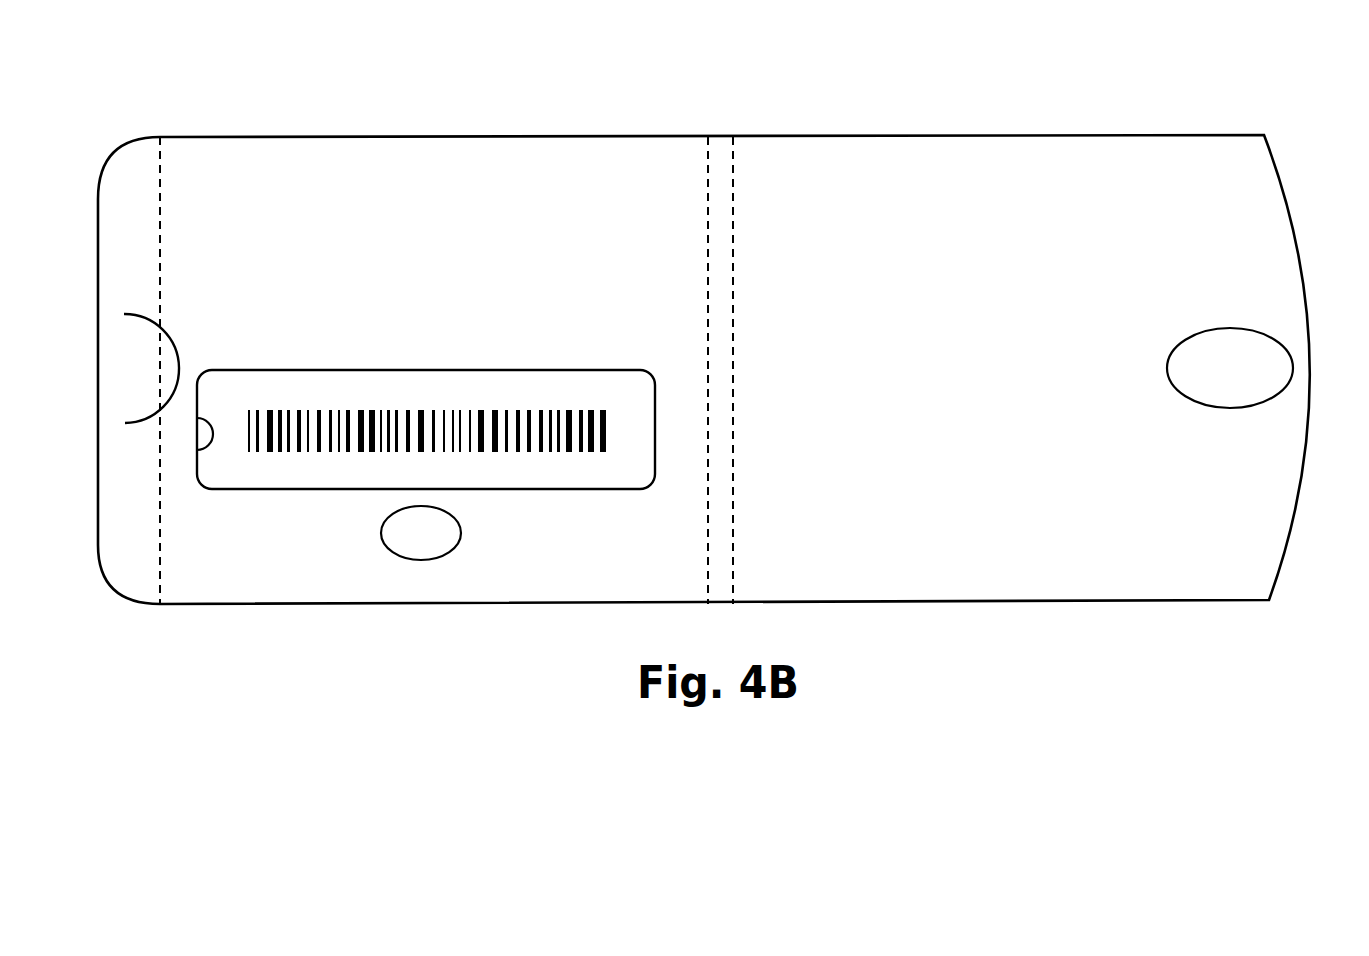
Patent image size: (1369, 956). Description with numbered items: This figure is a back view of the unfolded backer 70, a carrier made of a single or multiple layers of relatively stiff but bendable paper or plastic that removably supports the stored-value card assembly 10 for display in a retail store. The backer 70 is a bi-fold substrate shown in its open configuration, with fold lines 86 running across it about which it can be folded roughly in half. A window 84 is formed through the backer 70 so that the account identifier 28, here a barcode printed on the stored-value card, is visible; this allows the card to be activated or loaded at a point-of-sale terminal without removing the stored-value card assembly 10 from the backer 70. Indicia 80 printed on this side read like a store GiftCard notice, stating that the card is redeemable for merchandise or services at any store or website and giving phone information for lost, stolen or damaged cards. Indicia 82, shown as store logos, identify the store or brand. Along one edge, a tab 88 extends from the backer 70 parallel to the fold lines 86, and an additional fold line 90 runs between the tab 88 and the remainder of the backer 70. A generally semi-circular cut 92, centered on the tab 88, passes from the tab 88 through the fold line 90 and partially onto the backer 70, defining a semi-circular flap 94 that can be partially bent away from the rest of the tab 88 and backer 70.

The stored-value card assembly 10 is at (226, 490).
The account identifier 28 is at (287, 452).
The backer 70 is at (1098, 107).
The indicia 80 is at (500, 186).
The indicia 82 is at (455, 543).
The window 84 is at (197, 453).
The fold line 86 is at (708, 150).
The tab 88 is at (130, 256).
The additional fold line 90 is at (160, 577).
The semi-circular cut 92 is at (138, 421).
The semi-circular flap 94 is at (162, 360).